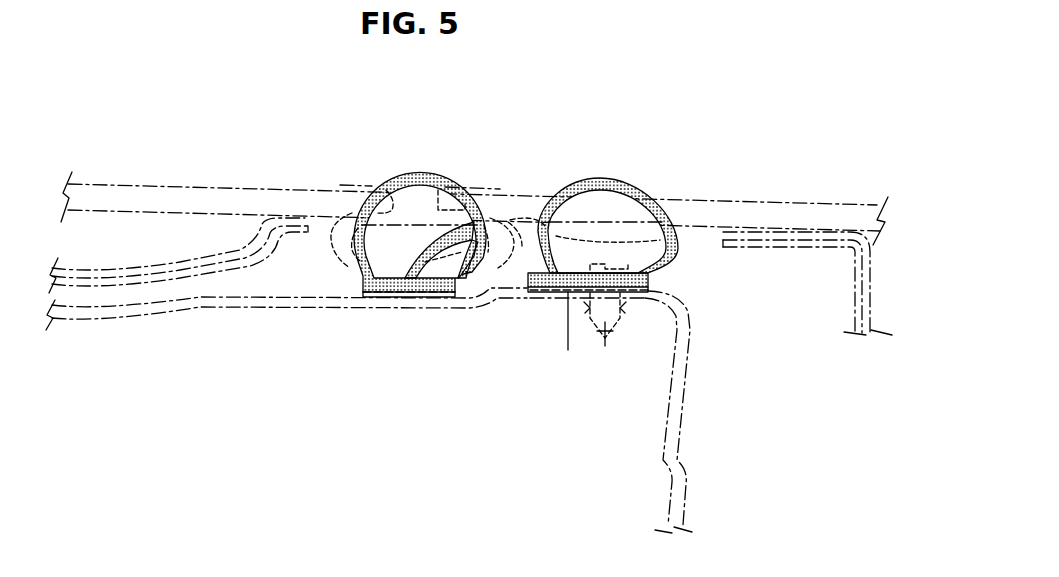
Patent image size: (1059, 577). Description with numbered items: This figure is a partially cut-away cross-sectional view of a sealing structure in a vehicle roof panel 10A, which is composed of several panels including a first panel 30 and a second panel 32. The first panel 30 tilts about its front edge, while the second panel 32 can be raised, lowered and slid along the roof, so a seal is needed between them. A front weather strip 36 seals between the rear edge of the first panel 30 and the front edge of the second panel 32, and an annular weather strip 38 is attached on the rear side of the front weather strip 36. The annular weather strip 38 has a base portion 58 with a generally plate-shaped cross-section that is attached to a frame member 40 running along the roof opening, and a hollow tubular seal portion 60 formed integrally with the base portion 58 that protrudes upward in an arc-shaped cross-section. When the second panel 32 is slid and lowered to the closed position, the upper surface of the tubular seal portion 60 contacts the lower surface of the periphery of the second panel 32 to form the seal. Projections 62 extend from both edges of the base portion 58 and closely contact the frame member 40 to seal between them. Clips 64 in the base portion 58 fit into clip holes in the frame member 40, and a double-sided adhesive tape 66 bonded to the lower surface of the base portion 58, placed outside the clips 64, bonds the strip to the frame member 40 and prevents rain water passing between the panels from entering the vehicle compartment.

The roof panel 10A is at (114, 182).
The first panel 30 is at (173, 184).
The second panel 32 is at (781, 198).
The front weather strip 36 is at (397, 169).
The annular weather strip 38 is at (569, 252).
The frame member 40 is at (680, 427).
The base portion 58 is at (550, 290).
The tubular seal portion 60 is at (624, 180).
The projection 62 is at (532, 293).
The clip 64 is at (609, 348).
The double-sided adhesive tape 66 is at (570, 349).